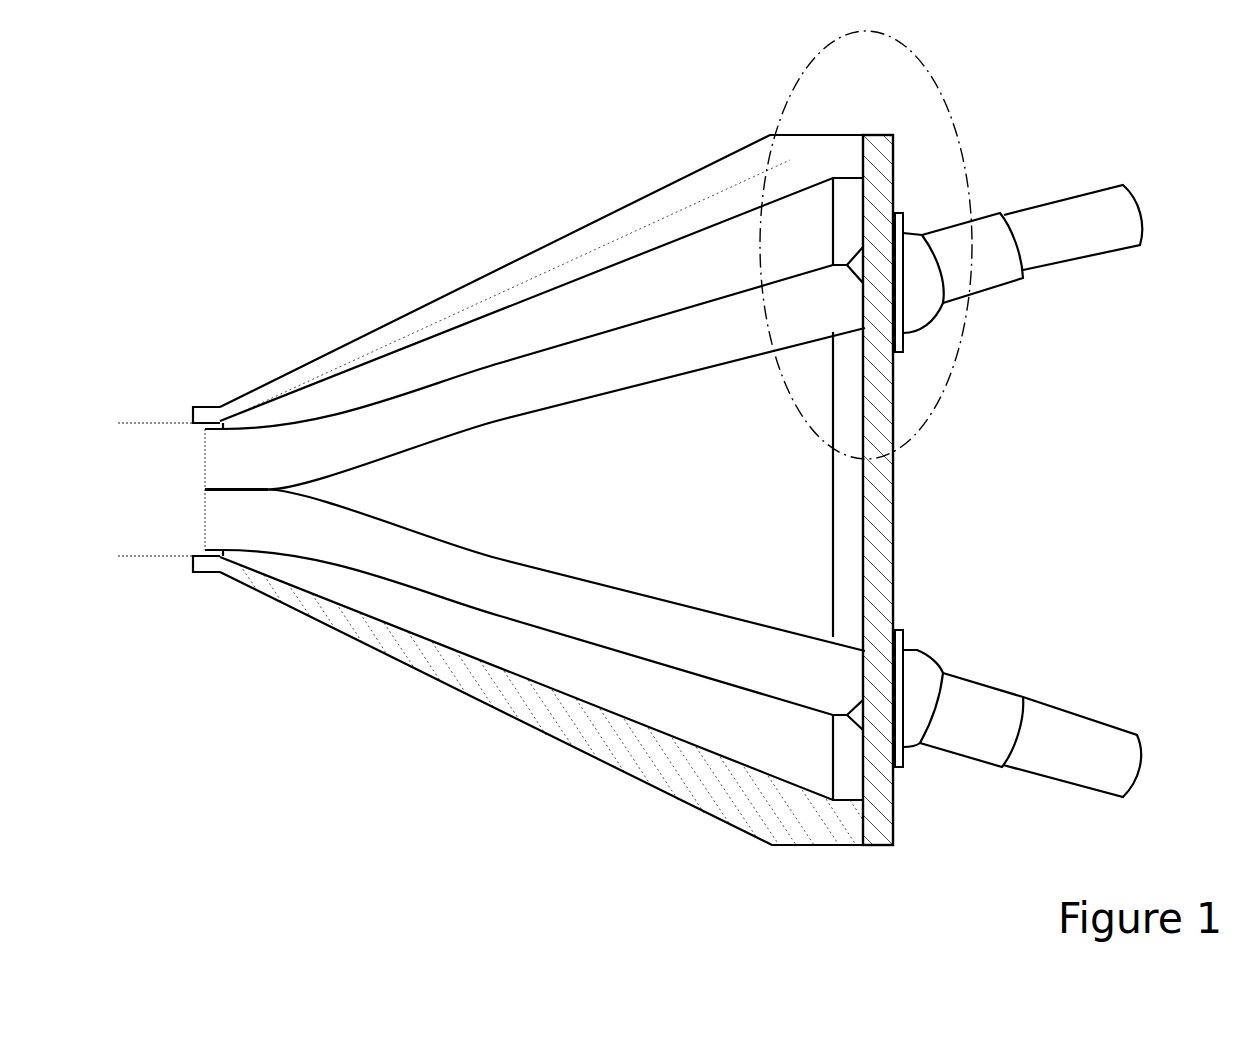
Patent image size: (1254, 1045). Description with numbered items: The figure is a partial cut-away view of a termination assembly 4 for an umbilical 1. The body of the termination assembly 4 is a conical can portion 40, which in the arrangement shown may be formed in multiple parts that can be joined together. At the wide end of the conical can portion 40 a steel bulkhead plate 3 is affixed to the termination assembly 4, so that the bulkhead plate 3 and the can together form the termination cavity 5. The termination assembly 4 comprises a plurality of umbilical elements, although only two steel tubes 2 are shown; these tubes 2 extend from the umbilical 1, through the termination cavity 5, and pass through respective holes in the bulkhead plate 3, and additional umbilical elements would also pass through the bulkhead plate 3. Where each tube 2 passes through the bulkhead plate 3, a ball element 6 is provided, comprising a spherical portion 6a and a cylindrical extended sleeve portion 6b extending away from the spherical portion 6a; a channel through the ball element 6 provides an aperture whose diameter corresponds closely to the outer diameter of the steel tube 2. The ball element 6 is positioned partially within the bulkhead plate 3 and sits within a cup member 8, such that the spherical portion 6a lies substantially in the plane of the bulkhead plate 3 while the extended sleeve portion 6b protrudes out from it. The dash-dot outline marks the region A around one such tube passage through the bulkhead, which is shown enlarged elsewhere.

The umbilical 1 is at (142, 443).
The steel tubes 2 is at (1080, 237).
The steel bulkhead plate 3 is at (880, 160).
The termination assembly 4 is at (450, 240).
The termination cavity 5 is at (533, 657).
The ball element 6 is at (917, 300).
The spherical portion 6a is at (922, 668).
The cylindrical extended sleeve portion 6b is at (978, 700).
The cup member 8 is at (900, 633).
The conical can portion 40 is at (393, 640).
The region A is at (975, 183).